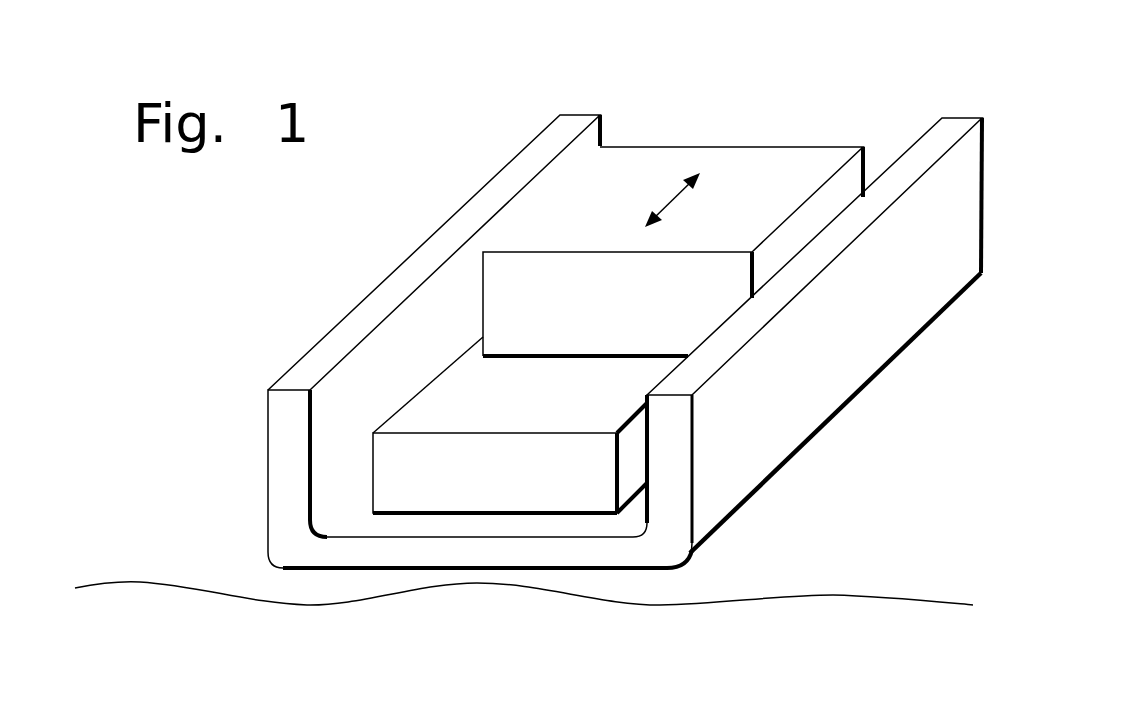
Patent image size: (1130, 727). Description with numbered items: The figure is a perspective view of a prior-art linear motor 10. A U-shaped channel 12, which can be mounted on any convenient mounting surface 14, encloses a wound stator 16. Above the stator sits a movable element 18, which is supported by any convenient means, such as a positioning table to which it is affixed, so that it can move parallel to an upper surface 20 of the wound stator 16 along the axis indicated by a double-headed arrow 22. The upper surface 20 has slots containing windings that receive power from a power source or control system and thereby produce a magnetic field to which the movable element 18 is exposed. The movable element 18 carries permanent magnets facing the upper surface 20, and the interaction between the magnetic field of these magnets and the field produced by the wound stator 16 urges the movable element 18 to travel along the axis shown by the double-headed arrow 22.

The linear motor 10 is at (178, 269).
The U-shaped channel 12 is at (965, 198).
The mounting surface 14 is at (915, 568).
The wound stator 16 is at (588, 480).
The movable element 18 is at (728, 165).
The upper surface 20 is at (450, 410).
The double-headed arrow 22 is at (673, 197).